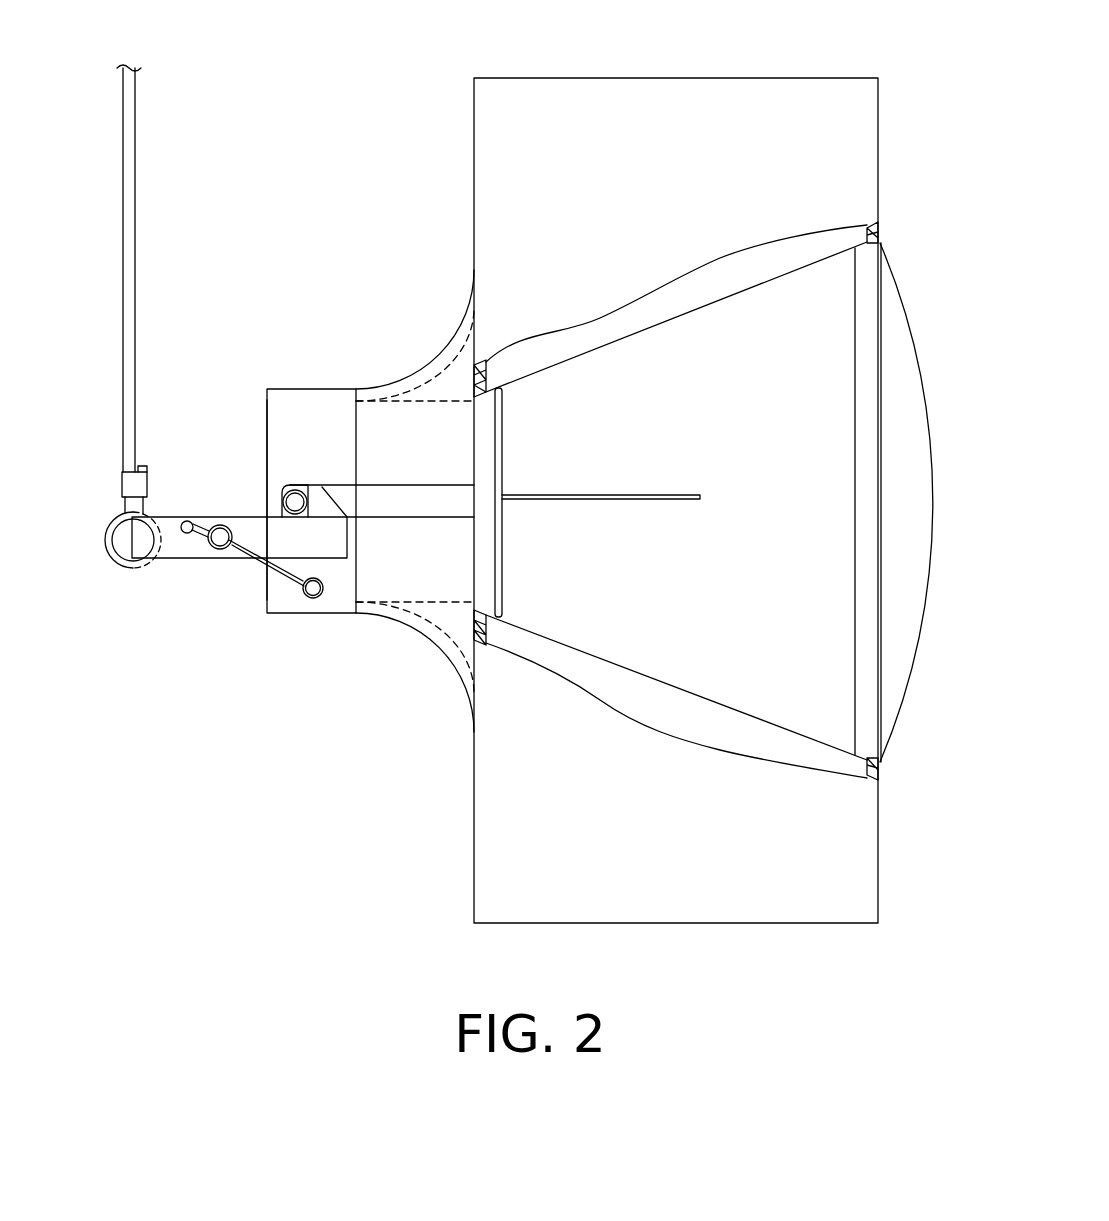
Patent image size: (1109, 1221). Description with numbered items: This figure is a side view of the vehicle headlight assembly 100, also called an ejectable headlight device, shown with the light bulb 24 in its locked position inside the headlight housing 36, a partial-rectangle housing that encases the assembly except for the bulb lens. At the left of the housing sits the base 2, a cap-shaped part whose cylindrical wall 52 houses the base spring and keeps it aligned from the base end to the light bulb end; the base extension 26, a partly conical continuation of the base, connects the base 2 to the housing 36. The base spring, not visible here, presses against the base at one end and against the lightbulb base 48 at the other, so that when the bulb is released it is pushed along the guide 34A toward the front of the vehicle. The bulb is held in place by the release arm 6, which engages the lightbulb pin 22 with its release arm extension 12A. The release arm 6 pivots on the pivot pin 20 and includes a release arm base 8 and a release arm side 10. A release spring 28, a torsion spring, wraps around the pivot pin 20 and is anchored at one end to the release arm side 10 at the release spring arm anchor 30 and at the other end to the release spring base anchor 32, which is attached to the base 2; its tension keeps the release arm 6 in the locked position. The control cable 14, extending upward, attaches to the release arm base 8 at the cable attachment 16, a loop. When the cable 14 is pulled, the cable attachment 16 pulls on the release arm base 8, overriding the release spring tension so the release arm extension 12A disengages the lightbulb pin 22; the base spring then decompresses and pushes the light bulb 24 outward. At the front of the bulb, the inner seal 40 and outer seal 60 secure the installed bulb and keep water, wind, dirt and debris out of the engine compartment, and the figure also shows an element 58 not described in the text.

The base 2 is at (265, 385).
The release arm 6 is at (115, 668).
The release arm base 8 is at (126, 552).
The release arm side 10 is at (175, 553).
The release arm extension 12A is at (327, 507).
The control cable 14 is at (136, 158).
The cable attachment 16 is at (105, 547).
The pivot pin 20 is at (211, 549).
The lightbulb pin 22 is at (290, 502).
The light bulb 24 is at (822, 588).
The base extension 26 is at (404, 600).
The release spring 28 is at (260, 578).
The release spring arm anchor 30 is at (190, 520).
The release spring base anchor 32 is at (313, 599).
The guide 34A is at (403, 497).
The housing 36 is at (680, 102).
The inner seal 40 is at (473, 368).
The lightbulb base 48 is at (438, 568).
The cylindrical wall 52 is at (278, 410).
The diaphragm 58 is at (913, 443).
The outer seal 60 is at (880, 232).
The vehicle headlight assembly 100 is at (347, 901).